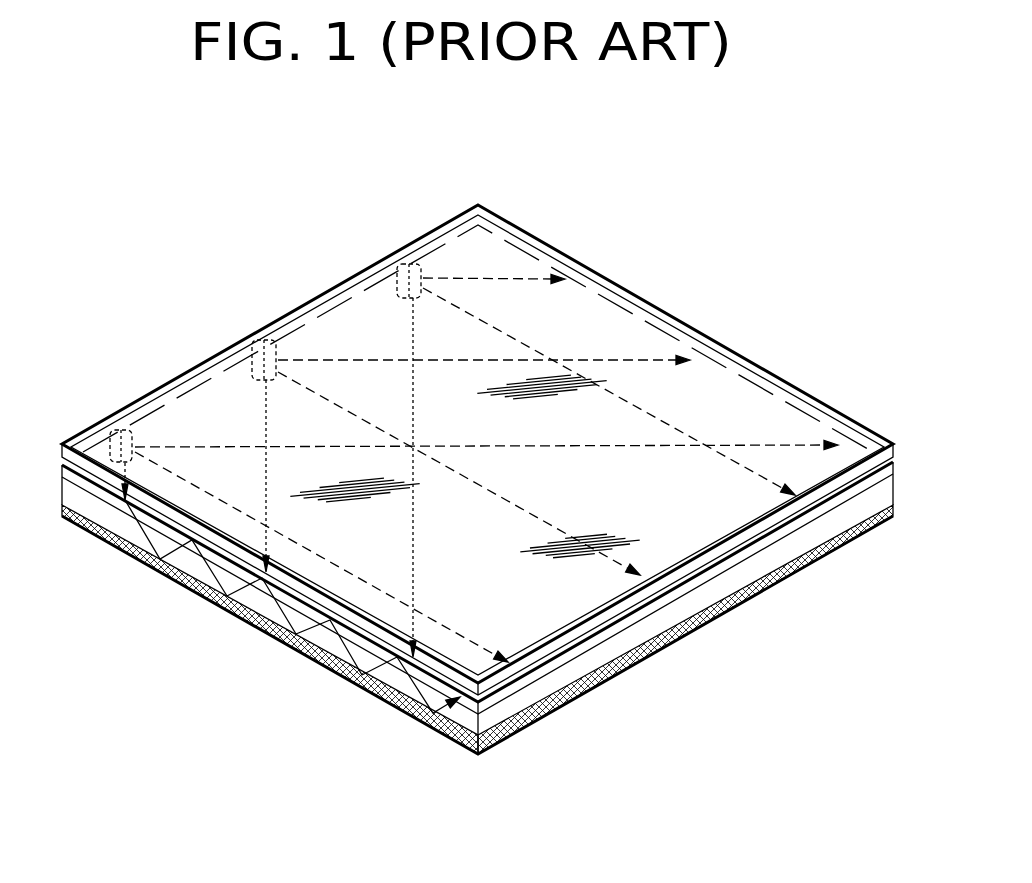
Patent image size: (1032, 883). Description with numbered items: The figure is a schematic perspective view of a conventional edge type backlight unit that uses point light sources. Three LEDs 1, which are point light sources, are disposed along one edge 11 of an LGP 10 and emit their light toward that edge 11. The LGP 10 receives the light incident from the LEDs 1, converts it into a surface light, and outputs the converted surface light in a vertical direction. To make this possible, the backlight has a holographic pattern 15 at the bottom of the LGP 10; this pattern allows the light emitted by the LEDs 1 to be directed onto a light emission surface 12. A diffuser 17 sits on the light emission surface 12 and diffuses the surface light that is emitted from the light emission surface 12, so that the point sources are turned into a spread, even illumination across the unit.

The LED 1 is at (107, 463).
The LGP 10 is at (755, 573).
The edge 11 is at (62, 466).
The light emission surface 12 is at (767, 522).
The holographic pattern 15 is at (688, 635).
The diffuser 17 is at (728, 347).